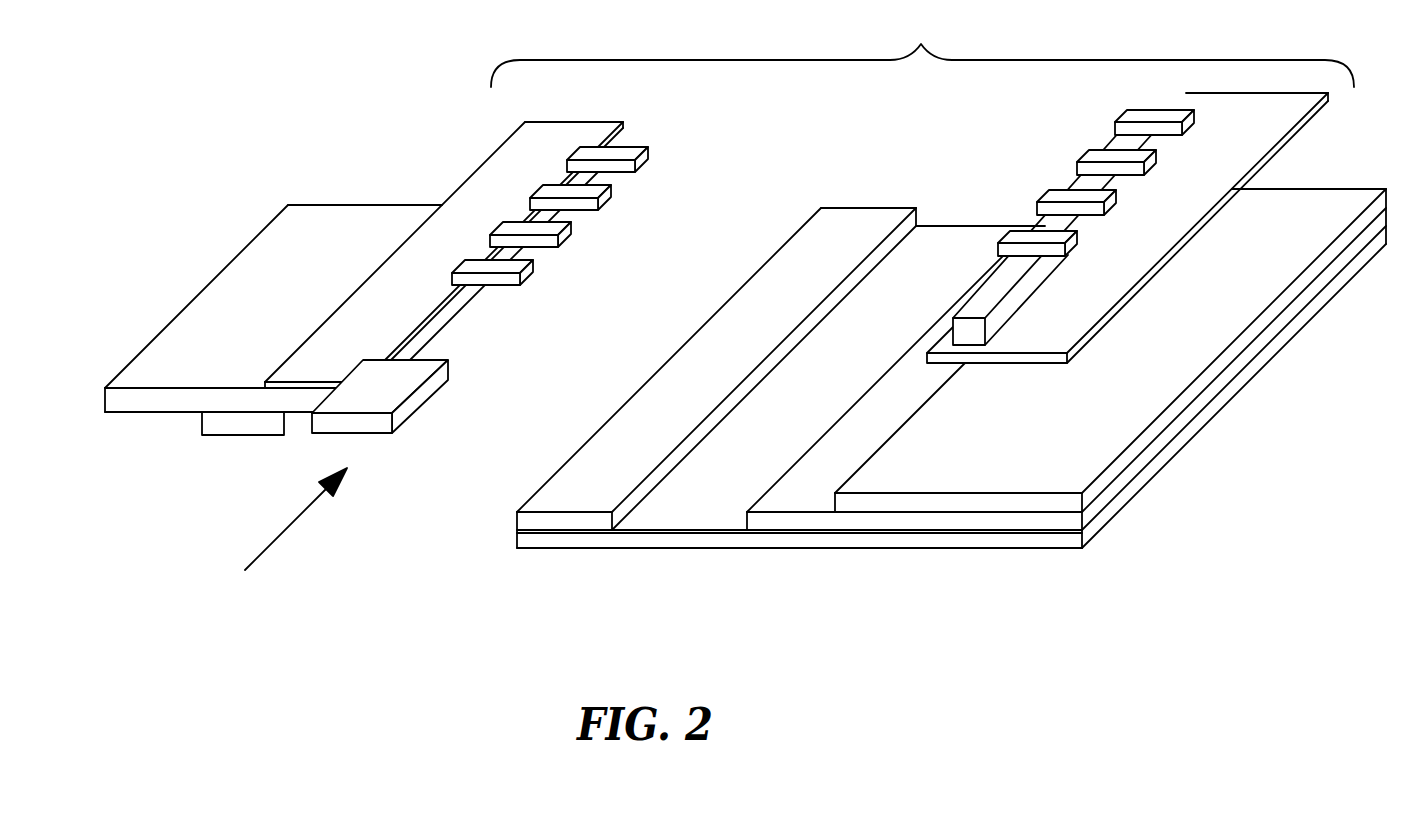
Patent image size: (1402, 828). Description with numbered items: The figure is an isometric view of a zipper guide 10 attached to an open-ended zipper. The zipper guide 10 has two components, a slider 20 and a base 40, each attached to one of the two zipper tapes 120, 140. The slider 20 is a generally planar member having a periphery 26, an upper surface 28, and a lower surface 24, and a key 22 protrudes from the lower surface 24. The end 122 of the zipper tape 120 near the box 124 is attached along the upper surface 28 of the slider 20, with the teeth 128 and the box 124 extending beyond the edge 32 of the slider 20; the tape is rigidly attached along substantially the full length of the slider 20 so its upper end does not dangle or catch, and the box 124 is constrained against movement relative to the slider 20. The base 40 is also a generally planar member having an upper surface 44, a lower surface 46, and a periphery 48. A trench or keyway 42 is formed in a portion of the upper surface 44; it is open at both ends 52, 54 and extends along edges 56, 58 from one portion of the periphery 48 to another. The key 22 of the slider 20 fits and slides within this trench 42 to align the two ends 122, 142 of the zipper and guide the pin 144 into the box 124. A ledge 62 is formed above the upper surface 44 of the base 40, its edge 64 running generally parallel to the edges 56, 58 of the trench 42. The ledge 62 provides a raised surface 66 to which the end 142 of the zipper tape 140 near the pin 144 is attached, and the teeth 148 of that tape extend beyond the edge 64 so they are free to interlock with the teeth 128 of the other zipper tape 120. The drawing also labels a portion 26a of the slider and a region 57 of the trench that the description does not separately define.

The zipper guide 10 is at (922, 49).
The slider 20 is at (263, 324).
The key 22 is at (225, 424).
The lower surface 24 is at (145, 413).
The periphery 26 is at (170, 322).
The rear edge of carrier 26a is at (312, 203).
The upper surface 28 is at (236, 333).
The edge 32 is at (393, 325).
The base 40 is at (951, 381).
The trench or keyway 42 is at (927, 262).
The upper surface 44 is at (716, 378).
The lower surface 46 is at (795, 552).
The periphery 48 is at (736, 292).
The end 52 is at (683, 515).
The end 54 is at (973, 247).
The edge 56 is at (848, 287).
The groove 57 is at (799, 381).
The edge 58 is at (870, 393).
The ledge 62 is at (1075, 398).
The edge of the ledge 64 is at (1047, 369).
The raised surface 66 is at (1110, 368).
The zipper tape 120 is at (506, 287).
The end 122 is at (397, 300).
The box 124 is at (380, 392).
The teeth 128 is at (568, 234).
The zipper tape 140 is at (1159, 221).
The end 142 is at (1022, 345).
The pin 144 is at (1030, 258).
The teeth 148 is at (1052, 197).